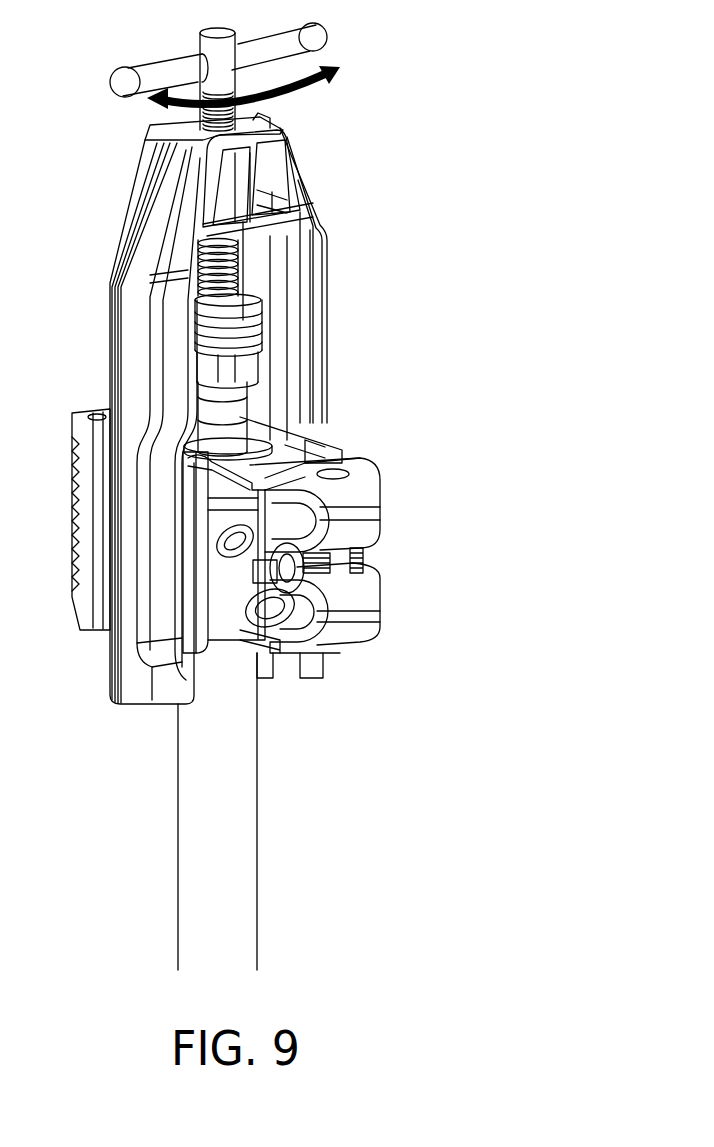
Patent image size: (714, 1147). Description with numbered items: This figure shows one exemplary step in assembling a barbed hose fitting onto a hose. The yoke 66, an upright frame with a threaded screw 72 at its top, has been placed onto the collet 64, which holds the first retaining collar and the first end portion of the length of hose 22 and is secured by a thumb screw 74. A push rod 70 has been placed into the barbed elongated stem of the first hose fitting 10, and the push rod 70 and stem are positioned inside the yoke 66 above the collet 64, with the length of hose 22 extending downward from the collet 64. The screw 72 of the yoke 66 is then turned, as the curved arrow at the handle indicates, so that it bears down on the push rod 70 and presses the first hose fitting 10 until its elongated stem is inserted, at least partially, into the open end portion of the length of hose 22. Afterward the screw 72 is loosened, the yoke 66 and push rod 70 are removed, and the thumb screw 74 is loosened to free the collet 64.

The first hose fitting 10 is at (262, 411).
The length of hose 22 is at (187, 842).
The collet 64 is at (393, 529).
The yoke 66 is at (104, 254).
The push rod 70 is at (237, 297).
The screw 72 is at (322, 38).
The thumb screw 74 is at (267, 610).